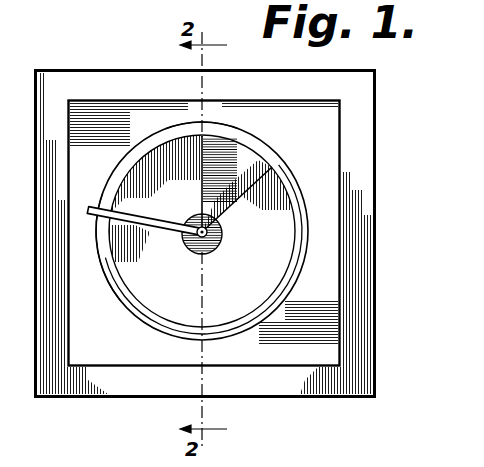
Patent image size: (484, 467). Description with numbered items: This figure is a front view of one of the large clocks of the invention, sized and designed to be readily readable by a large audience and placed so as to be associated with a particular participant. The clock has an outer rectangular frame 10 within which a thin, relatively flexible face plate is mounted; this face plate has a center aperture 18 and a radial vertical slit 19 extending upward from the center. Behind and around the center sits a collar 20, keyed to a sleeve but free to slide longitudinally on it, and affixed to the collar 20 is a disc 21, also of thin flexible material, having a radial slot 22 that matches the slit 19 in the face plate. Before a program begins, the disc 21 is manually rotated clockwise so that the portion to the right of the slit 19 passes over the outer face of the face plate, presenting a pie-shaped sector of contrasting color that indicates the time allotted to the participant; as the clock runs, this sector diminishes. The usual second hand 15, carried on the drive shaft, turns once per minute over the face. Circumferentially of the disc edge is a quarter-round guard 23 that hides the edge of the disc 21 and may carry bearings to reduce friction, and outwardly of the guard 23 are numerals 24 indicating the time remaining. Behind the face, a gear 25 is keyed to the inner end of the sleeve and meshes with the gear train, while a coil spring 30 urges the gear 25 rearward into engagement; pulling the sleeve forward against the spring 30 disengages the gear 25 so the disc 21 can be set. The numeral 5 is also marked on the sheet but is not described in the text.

The bezel ring 5 is at (297, 178).
The outer rectangular frame 10 is at (376, 189).
The second hand 15 is at (146, 212).
The center aperture 18 is at (197, 252).
The radial vertical slit 19 is at (201, 169).
The collar 20 is at (113, 289).
The disc 21 is at (222, 244).
The radial slot 22 is at (246, 208).
The quarter-round guard 23 is at (156, 329).
The numerals 24 is at (216, 107).
The gear 25 is at (112, 179).
The coil spring 30 is at (202, 114).